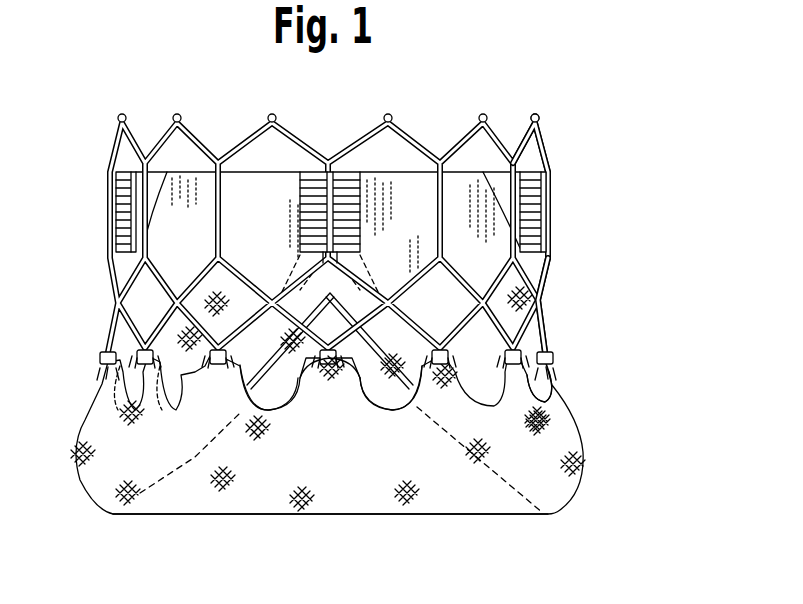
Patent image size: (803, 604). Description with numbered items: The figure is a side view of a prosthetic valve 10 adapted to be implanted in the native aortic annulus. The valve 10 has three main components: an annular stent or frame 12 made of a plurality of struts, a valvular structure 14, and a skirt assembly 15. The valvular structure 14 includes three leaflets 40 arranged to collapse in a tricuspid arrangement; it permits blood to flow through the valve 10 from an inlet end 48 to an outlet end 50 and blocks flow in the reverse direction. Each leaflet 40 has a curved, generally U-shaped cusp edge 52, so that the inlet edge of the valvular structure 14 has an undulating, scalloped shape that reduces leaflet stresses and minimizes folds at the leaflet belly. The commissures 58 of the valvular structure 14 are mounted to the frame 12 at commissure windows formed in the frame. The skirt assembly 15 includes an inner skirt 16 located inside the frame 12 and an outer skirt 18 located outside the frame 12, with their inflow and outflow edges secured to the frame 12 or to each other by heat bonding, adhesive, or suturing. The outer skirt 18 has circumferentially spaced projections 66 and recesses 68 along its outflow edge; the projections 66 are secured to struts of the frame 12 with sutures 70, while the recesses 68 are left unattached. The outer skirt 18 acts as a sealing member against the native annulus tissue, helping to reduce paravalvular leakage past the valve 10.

The prosthetic valve 10 is at (550, 78).
The frame 12 is at (404, 132).
The valvular structure 14 is at (490, 250).
The skirt assembly 15 is at (586, 463).
The inner skirt 16 is at (541, 279).
The outer skirt 18 is at (543, 492).
The leaflet 40 is at (493, 198).
The inlet end 48 is at (137, 515).
The outlet end 50 is at (539, 117).
The cusp edge 52 is at (195, 457).
The commissure 58 is at (324, 172).
The projection 66 is at (530, 355).
The recess 68 is at (560, 393).
The suture 70 is at (318, 380).